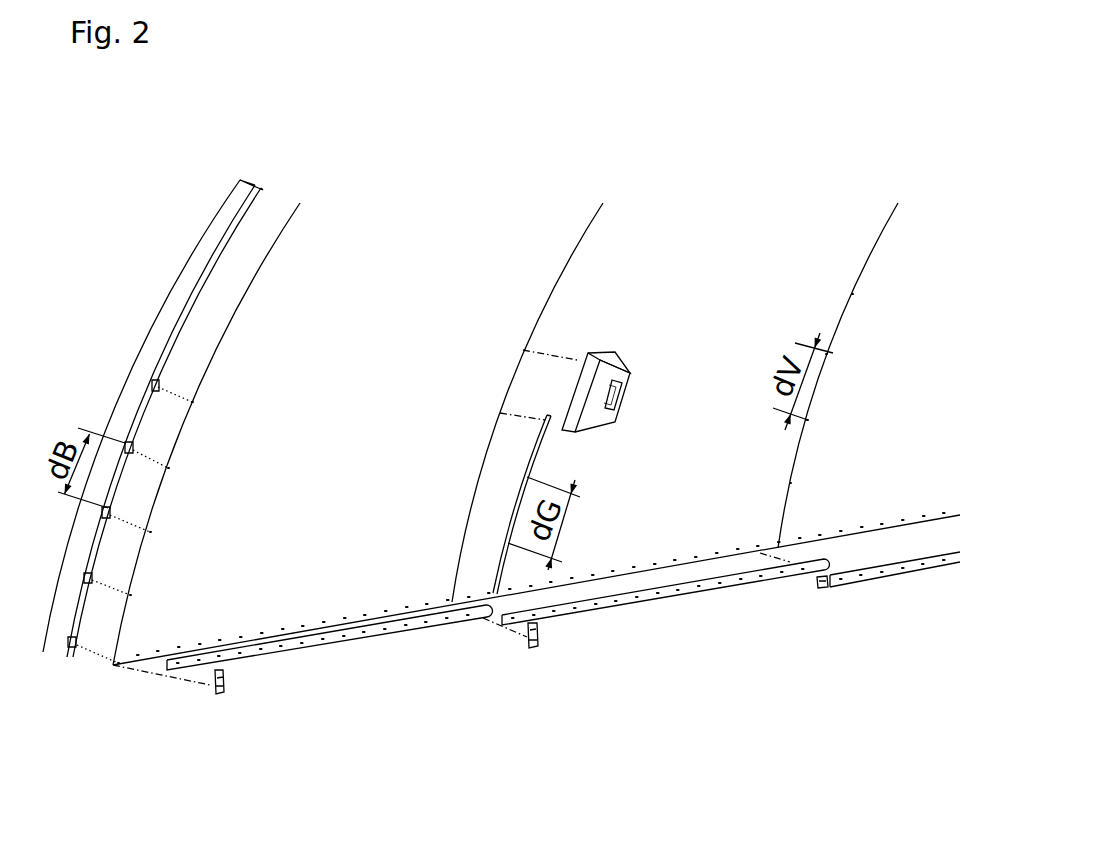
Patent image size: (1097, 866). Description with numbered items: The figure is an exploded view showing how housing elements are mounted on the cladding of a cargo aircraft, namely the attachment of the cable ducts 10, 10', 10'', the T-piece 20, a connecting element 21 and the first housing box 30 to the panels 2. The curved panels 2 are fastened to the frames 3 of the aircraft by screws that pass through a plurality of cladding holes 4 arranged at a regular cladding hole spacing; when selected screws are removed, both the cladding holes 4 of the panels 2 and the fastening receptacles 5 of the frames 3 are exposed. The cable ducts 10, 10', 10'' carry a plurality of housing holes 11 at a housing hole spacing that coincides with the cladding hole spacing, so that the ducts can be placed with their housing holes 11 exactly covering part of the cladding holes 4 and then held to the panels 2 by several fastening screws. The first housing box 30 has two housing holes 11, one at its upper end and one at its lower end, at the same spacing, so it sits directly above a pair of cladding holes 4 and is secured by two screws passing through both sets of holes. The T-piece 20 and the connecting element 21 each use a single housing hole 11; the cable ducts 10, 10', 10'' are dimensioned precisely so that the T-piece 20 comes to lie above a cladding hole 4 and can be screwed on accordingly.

The panel 2 is at (490, 327).
The frame 3 is at (219, 203).
The cladding hole 4 is at (830, 355).
The fastening receptacle 5 is at (157, 385).
The cable duct 10 is at (330, 694).
The cable duct 10' is at (731, 640).
The cable duct 10'' is at (431, 503).
The housing hole 11 is at (527, 477).
The T-piece 20 is at (531, 648).
The connecting element 21 is at (823, 585).
The first housing box 30 is at (585, 403).